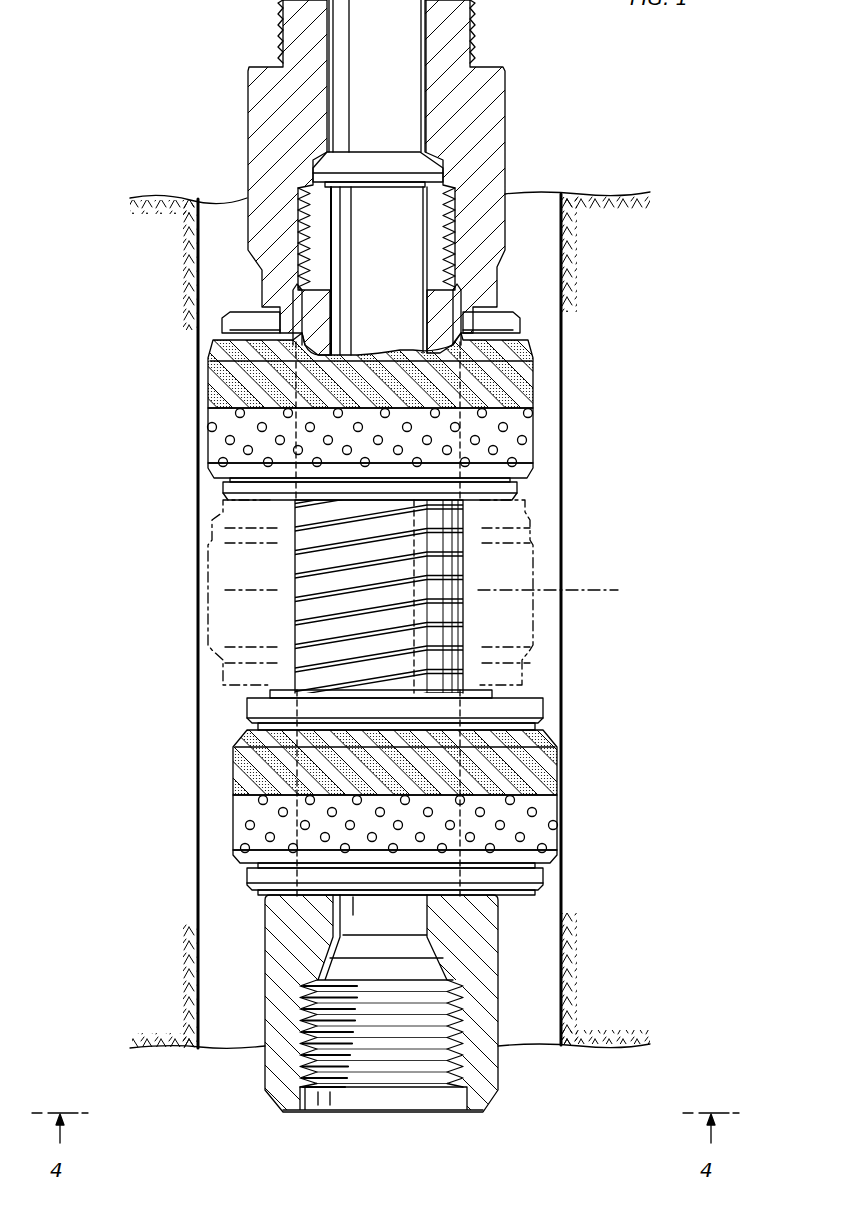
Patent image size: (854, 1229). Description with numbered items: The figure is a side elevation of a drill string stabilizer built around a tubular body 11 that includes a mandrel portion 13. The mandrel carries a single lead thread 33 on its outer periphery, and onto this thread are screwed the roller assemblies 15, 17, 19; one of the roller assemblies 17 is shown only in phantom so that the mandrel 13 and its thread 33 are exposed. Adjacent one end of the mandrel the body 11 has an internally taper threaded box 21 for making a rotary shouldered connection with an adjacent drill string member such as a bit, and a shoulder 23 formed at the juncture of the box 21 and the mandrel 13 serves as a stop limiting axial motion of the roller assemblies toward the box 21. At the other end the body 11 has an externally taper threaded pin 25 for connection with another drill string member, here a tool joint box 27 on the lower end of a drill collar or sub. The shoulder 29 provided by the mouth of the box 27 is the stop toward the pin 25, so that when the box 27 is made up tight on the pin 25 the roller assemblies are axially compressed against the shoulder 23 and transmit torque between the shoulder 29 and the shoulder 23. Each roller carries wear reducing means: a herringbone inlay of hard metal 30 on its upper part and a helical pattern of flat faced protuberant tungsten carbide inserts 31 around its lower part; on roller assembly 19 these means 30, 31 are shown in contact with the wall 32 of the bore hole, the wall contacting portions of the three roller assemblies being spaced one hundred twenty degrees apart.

The tubular body 11 is at (250, 568).
The mandrel portion 13 is at (297, 610).
The roller assembly 15 is at (530, 407).
The roller assembly 17 is at (563, 591).
The roller assembly 19 is at (561, 795).
The internally taper threaded box 21 is at (480, 1013).
The shoulder 23 is at (270, 900).
The externally taper threaded pin 25 is at (455, 241).
The tool joint box 27 is at (480, 197).
The shoulder 29 is at (467, 307).
The herringbone inlay of hard metal 30 is at (535, 377).
The tungsten carbide inserts 31 is at (527, 437).
The wall of the bore hole 32 is at (562, 687).
The single lead thread 33 is at (467, 577).